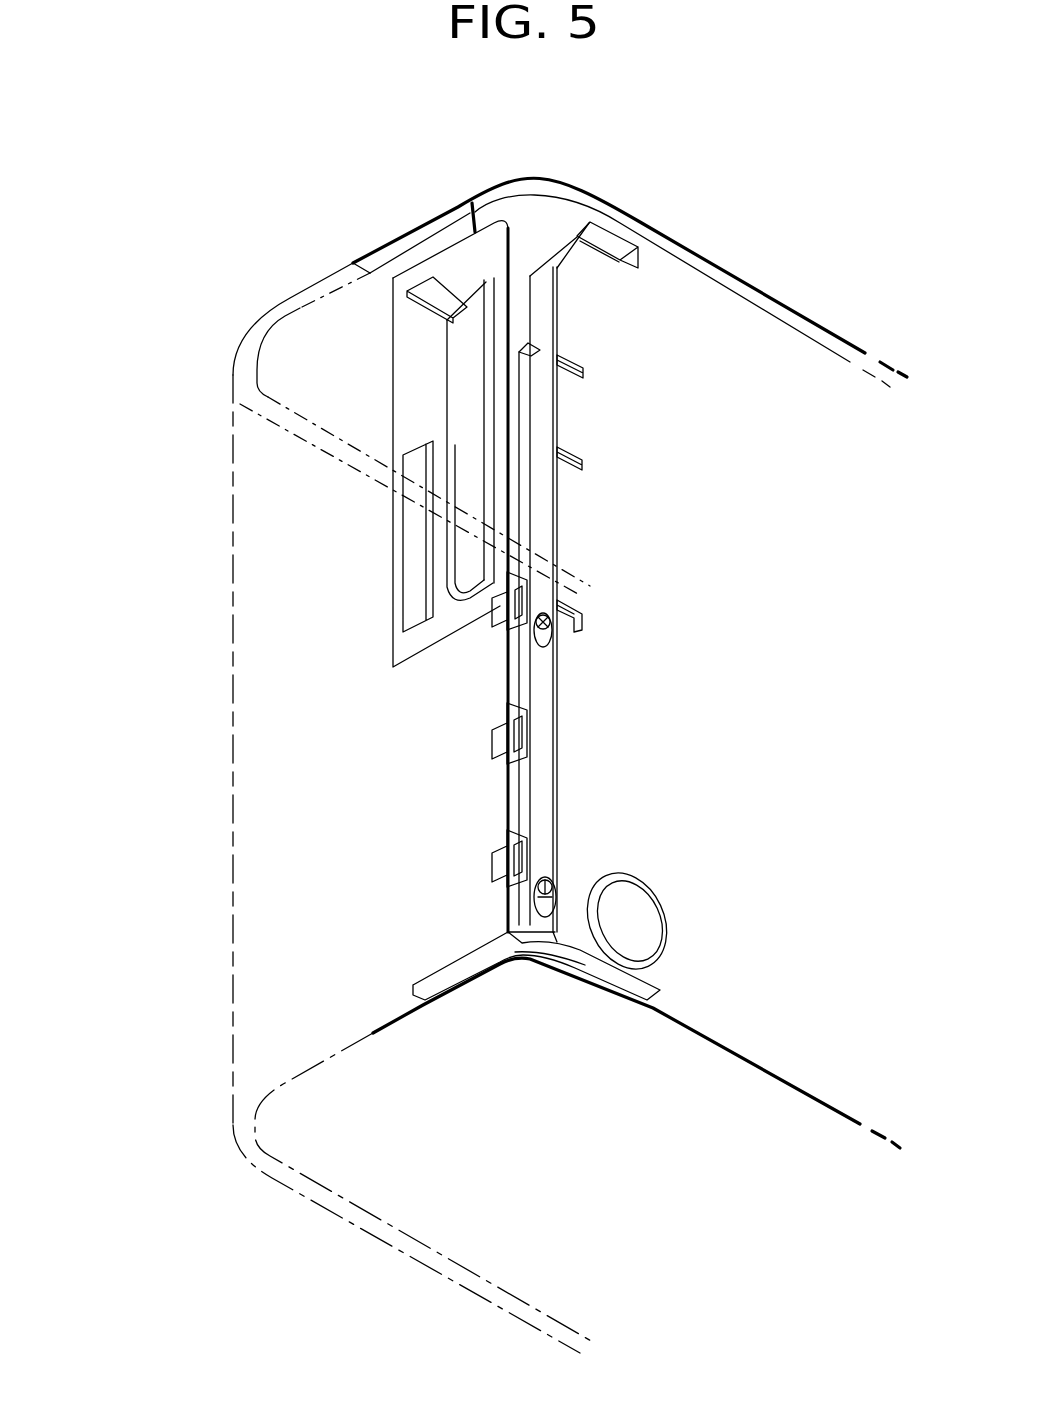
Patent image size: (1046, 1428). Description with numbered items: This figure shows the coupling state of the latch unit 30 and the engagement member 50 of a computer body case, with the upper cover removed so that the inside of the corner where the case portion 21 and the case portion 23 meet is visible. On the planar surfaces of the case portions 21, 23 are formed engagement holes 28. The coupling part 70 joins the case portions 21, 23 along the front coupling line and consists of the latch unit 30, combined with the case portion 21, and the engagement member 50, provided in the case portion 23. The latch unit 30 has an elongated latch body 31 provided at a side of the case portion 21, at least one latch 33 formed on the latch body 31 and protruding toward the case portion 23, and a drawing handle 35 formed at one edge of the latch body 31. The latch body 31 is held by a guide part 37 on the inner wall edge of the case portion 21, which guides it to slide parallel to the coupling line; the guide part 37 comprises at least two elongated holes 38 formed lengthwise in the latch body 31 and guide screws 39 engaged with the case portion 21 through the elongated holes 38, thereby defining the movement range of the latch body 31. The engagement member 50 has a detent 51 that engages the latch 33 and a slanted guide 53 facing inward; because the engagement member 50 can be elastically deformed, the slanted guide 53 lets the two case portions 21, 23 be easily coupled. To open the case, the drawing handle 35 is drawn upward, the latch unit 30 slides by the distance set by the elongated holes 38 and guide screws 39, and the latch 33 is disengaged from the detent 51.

The case portion 21 is at (652, 863).
The case portion 23 is at (173, 642).
The engagement hole 28 is at (483, 322).
The latch unit 30 is at (607, 427).
The latch body 31 is at (558, 480).
The latch 33 is at (578, 581).
The drawing handle 35 is at (623, 258).
The guide part 37 is at (622, 668).
The elongated hole 38 is at (548, 650).
The guide screw 39 is at (551, 630).
The engagement member 50 is at (601, 752).
The detent 51 is at (523, 757).
The slanted guide 53 is at (524, 733).
The coupling part 70 is at (724, 418).